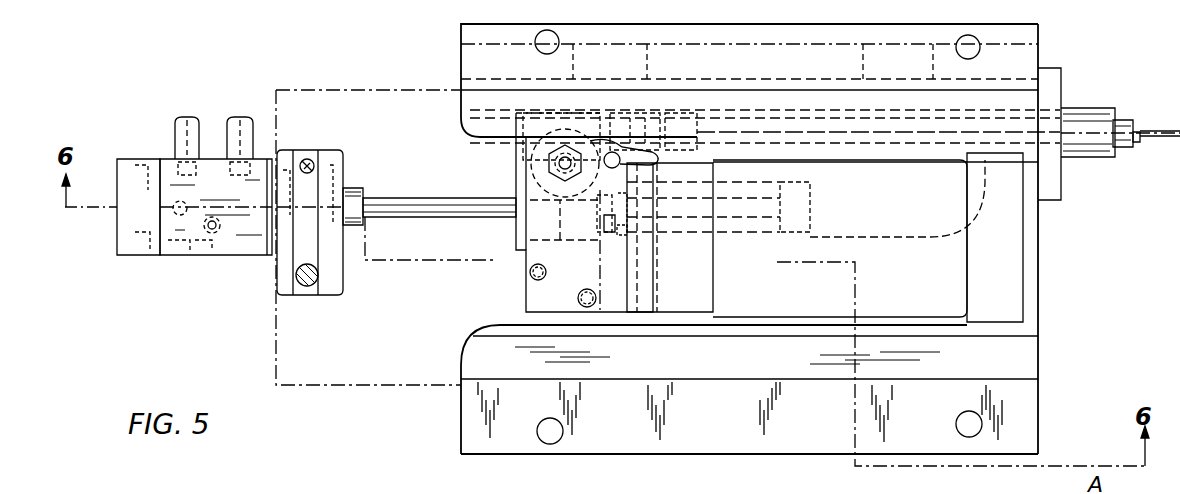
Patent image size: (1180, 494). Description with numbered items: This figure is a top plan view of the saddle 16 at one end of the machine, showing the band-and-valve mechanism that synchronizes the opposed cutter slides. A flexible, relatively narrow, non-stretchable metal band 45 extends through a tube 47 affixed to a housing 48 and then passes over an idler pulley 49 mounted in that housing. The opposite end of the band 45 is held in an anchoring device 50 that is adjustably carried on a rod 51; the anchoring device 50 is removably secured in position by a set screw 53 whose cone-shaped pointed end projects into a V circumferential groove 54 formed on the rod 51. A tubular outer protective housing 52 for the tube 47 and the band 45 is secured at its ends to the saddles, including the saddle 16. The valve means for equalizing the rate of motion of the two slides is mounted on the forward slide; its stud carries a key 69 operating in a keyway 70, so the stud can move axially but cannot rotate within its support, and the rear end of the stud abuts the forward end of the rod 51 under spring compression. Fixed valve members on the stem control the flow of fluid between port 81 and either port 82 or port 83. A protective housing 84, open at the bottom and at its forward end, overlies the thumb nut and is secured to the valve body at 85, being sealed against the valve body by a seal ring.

The saddle 16 is at (1038, 368).
The band 45 is at (1160, 135).
The tube 47 is at (1118, 126).
The housing 48 is at (565, 130).
The idler pulley 49 is at (537, 168).
The anchoring device 50 is at (600, 227).
The rod 51 is at (468, 212).
The tubular outer protective housing 52 is at (1095, 156).
The set screw 53 is at (607, 230).
The V circumferential groove 54 is at (615, 210).
The key 69 is at (335, 178).
The keyway 70 is at (340, 205).
The port 81 is at (210, 233).
The port 82 is at (193, 134).
The port 83 is at (235, 125).
The protective housing 84 is at (133, 160).
The securing point 85 is at (137, 250).